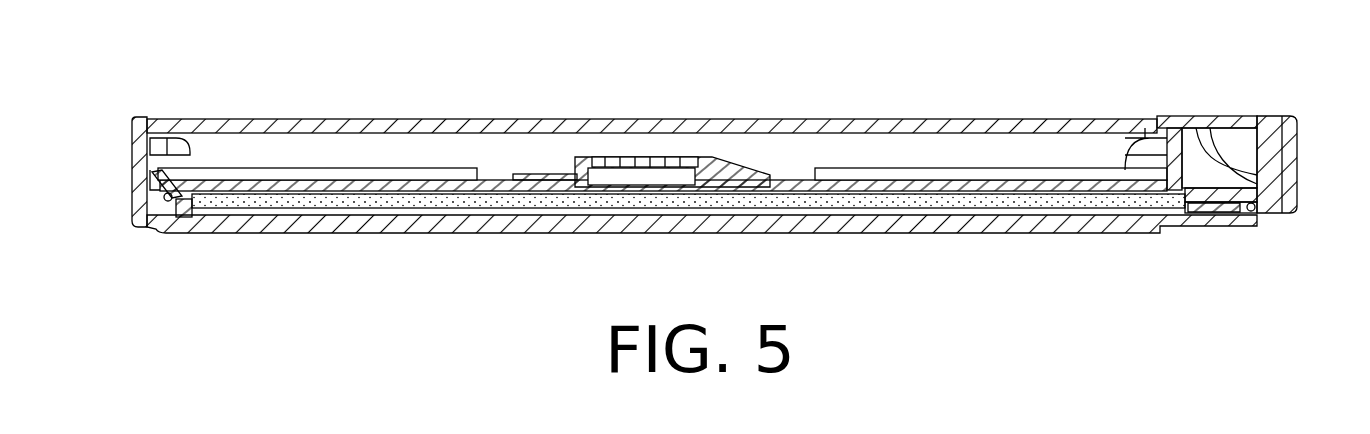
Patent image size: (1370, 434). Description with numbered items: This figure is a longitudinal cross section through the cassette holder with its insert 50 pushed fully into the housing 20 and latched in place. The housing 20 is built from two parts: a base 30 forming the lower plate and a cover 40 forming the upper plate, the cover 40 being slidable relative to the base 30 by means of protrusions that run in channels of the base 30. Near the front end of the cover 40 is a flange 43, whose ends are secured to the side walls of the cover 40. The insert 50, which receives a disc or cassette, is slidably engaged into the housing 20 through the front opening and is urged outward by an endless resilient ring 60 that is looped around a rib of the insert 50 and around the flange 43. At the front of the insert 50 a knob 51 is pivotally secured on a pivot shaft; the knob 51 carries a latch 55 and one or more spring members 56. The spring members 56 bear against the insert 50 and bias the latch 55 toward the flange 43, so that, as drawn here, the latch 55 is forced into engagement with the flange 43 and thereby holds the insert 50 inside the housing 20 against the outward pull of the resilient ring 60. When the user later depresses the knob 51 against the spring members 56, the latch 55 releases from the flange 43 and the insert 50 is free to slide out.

The housing 20 is at (677, 117).
The cover 40 is at (915, 125).
The base 30 is at (958, 228).
The insert 50 is at (1180, 117).
The spring member 56 is at (1222, 150).
The knob 51 is at (1297, 163).
The latch 55 is at (1222, 203).
The flange 43 is at (1243, 205).
The resilient ring 60 is at (1262, 213).